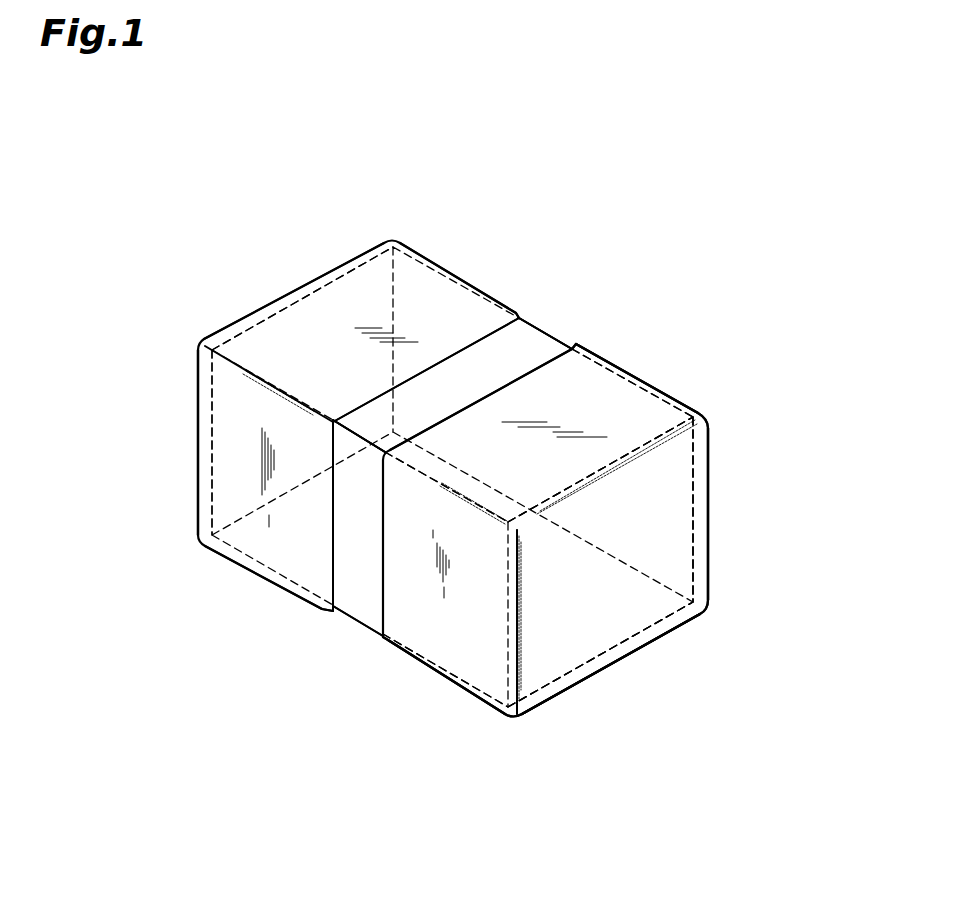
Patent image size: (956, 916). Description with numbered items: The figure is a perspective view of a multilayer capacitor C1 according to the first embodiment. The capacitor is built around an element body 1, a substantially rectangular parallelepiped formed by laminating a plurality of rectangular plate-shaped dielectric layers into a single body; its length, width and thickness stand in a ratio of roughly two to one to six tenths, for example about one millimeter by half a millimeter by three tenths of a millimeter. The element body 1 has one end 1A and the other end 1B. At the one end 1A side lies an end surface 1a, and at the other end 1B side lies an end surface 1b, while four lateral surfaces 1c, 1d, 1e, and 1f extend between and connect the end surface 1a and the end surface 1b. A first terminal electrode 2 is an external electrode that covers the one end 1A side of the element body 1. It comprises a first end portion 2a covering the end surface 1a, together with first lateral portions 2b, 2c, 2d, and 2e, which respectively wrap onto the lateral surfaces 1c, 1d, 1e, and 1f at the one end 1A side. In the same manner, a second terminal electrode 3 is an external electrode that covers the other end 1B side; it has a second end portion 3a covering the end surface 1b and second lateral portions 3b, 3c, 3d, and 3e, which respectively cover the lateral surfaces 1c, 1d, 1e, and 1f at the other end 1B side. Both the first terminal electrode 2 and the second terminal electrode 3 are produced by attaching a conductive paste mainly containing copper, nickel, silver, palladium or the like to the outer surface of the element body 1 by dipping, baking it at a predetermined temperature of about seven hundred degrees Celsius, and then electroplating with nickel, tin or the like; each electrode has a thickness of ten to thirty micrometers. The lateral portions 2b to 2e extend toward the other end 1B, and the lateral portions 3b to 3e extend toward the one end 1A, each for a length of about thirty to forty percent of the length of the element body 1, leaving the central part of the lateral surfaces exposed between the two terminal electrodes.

The element body 1 is at (497, 367).
The one end 1A is at (282, 286).
The other end 1B is at (652, 475).
The end surface 1a is at (362, 313).
The end surface 1b is at (640, 518).
The lateral surface 1c is at (516, 352).
The lateral surface 1d is at (355, 597).
The lateral surface 1e is at (495, 667).
The lateral surface 1f is at (542, 382).
The first terminal electrode 2 is at (383, 300).
The first end portion 2a is at (197, 440).
The first lateral portion 2b is at (268, 352).
The first lateral portion 2c is at (287, 538).
The first lateral portion 2d is at (240, 565).
The first lateral portion 2e is at (460, 335).
The second terminal electrode 3 is at (638, 432).
The second end portion 3a is at (597, 603).
The second lateral portion 3b is at (557, 405).
The second lateral portion 3c is at (430, 627).
The second lateral portion 3d is at (533, 705).
The second lateral portion 3e is at (713, 537).
The multilayer capacitor C1 is at (713, 283).